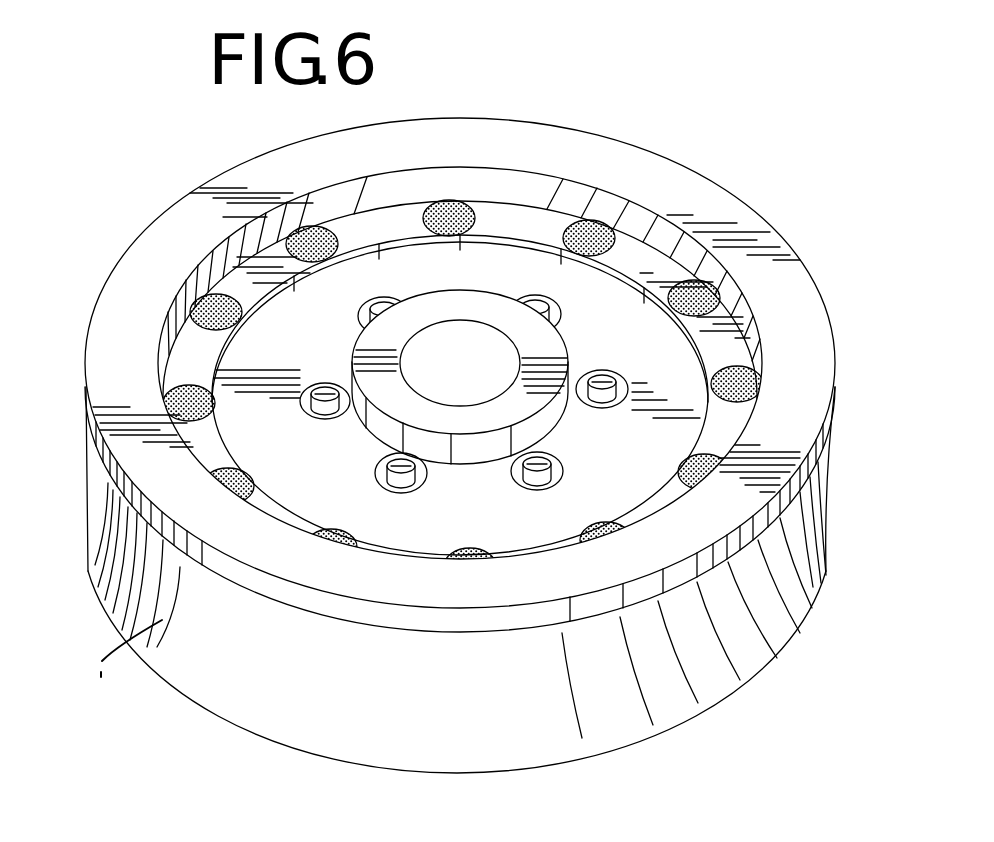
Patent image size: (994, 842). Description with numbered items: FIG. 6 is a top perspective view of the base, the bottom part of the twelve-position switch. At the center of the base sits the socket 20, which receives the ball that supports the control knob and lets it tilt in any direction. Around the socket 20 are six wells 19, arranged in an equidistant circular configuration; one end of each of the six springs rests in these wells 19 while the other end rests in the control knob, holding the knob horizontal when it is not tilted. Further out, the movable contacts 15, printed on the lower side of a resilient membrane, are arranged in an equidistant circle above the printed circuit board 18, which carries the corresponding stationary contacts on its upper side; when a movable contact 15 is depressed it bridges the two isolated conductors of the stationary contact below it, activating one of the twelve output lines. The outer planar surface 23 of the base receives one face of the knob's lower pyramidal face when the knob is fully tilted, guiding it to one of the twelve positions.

The movable contacts 15 is at (315, 243).
The printed circuit board 18 is at (633, 243).
The wells 19 is at (547, 472).
The socket 20 is at (378, 352).
The planar surface 23 is at (132, 313).